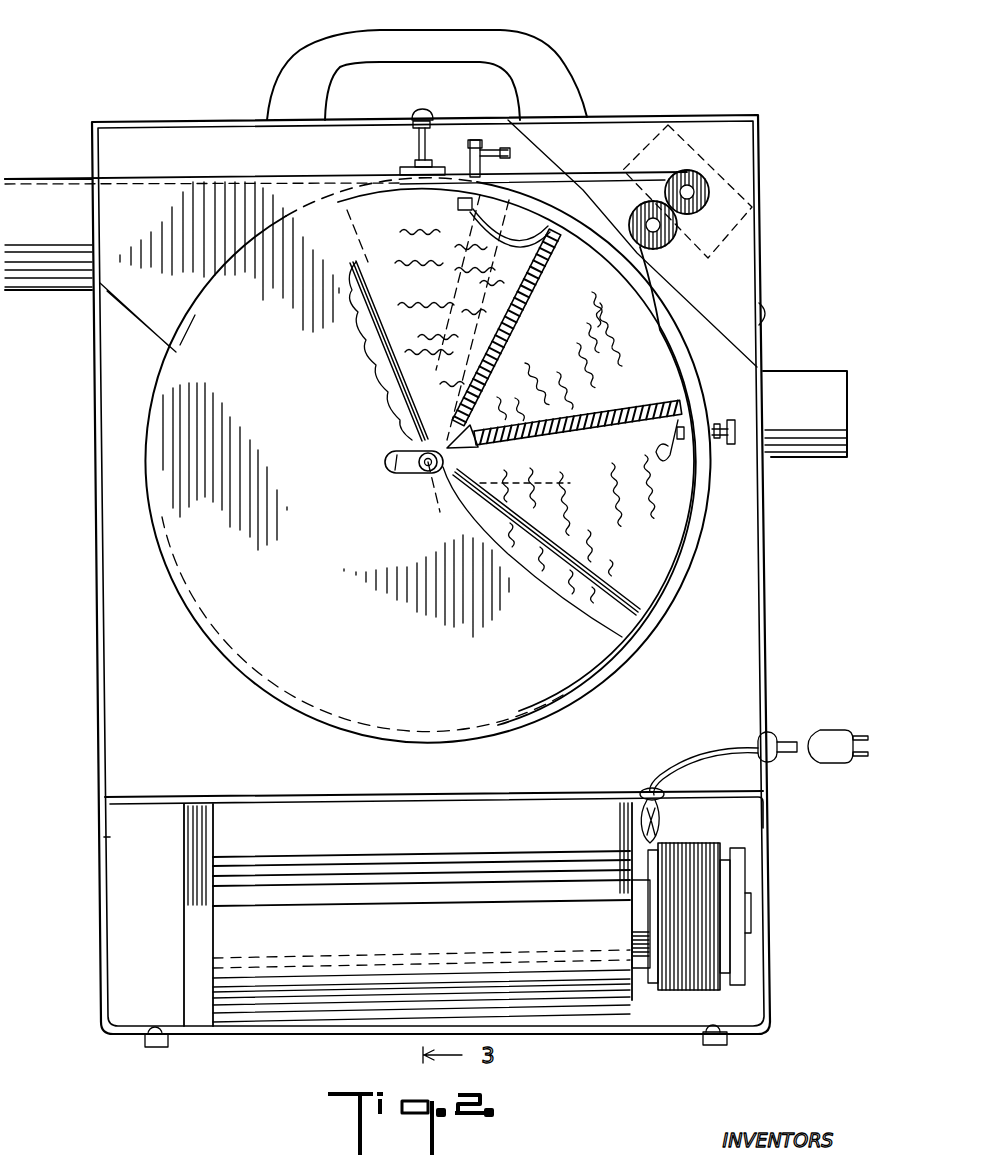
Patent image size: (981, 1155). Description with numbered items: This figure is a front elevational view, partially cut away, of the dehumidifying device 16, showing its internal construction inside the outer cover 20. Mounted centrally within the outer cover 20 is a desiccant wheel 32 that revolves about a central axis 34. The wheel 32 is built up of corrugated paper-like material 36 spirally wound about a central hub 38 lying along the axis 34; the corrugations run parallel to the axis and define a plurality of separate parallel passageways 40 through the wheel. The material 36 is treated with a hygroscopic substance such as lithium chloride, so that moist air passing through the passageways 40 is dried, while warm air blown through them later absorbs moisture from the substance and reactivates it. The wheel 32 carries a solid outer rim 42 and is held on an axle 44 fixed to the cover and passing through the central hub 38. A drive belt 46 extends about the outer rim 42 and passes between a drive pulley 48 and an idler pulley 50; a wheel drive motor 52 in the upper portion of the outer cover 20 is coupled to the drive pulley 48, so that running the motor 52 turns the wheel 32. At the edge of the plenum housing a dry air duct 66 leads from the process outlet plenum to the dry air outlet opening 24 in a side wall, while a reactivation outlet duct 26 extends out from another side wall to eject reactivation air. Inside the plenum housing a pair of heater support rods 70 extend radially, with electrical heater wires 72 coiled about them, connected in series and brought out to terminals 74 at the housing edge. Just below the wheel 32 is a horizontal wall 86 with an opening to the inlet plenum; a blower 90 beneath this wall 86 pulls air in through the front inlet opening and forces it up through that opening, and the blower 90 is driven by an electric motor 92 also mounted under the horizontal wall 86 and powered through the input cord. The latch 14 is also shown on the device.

The latch 14 is at (474, 140).
The dehumidifying device 16 is at (164, 95).
The outer cover 20 is at (686, 115).
The dry air outlet opening 24 is at (30, 176).
The reactivation outlet duct 26 is at (824, 385).
The desiccant wheel 32 is at (665, 578).
The central axis 34 is at (417, 478).
The corrugated paper-like material 36 is at (628, 517).
The central hub 38 is at (443, 482).
The passageways 40 is at (432, 273).
The outer rim 42 is at (588, 222).
The axle 44 is at (418, 456).
The drive belt 46 is at (583, 175).
The drive pulley 48 is at (693, 170).
The idler pulley 50 is at (665, 245).
The wheel drive motor 52 is at (725, 166).
The dry air duct 66 is at (198, 190).
The heater support rods 70 is at (556, 258).
The electrical heater wires 72 is at (546, 300).
The terminals 74 is at (724, 420).
The horizontal wall 86 is at (525, 326).
The blower 90 is at (227, 893).
The electric motor 92 is at (720, 989).